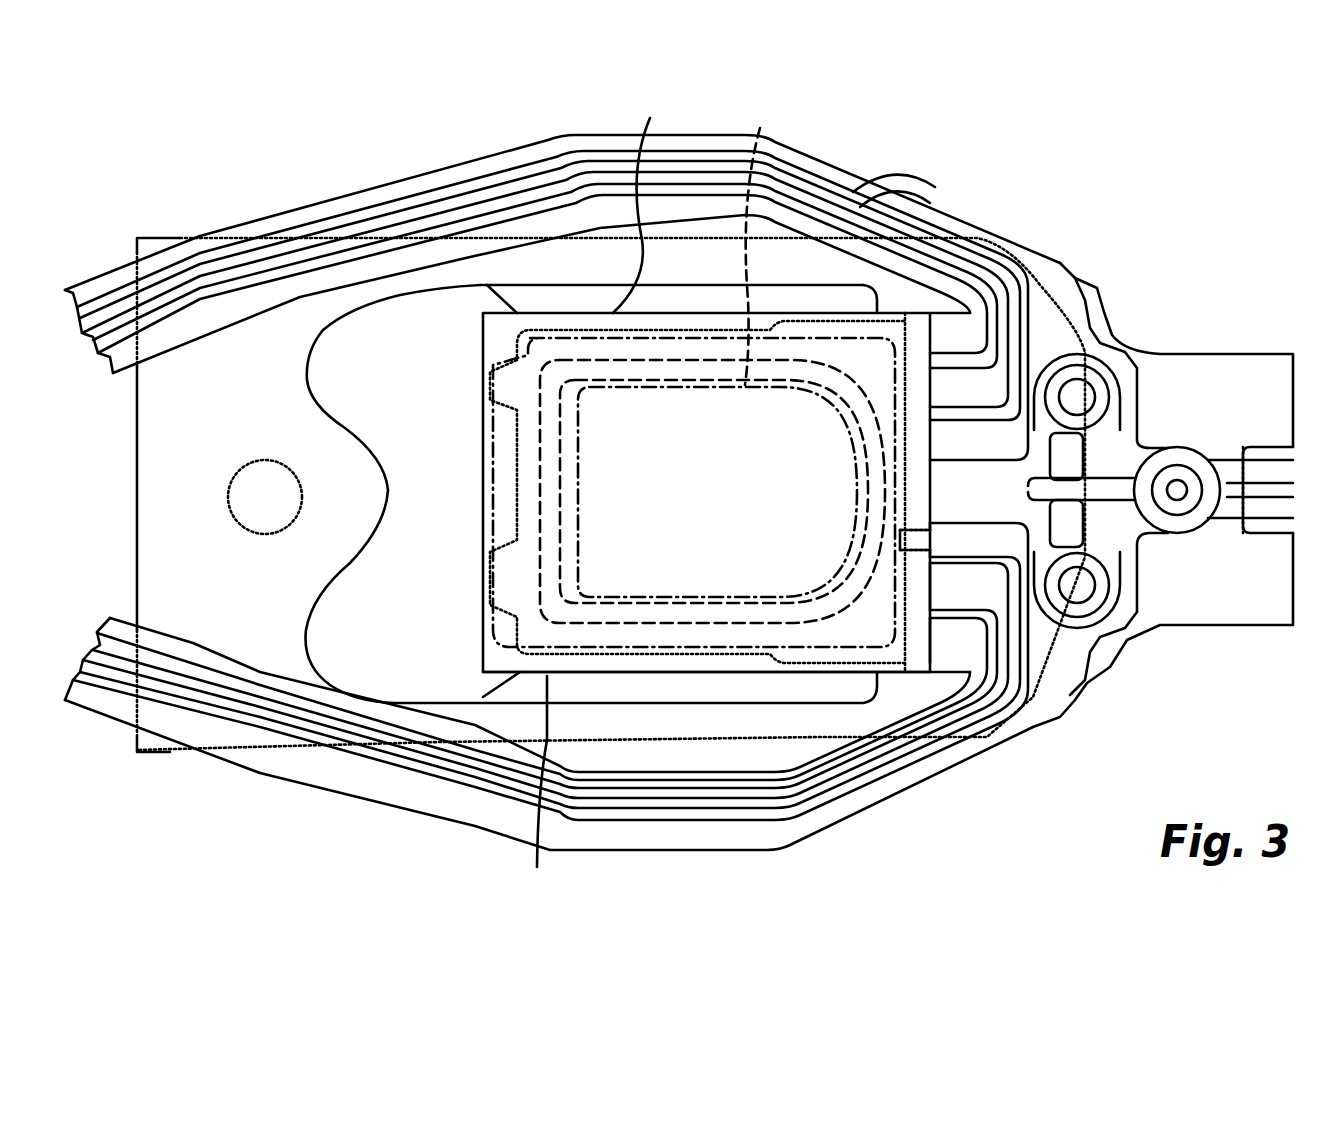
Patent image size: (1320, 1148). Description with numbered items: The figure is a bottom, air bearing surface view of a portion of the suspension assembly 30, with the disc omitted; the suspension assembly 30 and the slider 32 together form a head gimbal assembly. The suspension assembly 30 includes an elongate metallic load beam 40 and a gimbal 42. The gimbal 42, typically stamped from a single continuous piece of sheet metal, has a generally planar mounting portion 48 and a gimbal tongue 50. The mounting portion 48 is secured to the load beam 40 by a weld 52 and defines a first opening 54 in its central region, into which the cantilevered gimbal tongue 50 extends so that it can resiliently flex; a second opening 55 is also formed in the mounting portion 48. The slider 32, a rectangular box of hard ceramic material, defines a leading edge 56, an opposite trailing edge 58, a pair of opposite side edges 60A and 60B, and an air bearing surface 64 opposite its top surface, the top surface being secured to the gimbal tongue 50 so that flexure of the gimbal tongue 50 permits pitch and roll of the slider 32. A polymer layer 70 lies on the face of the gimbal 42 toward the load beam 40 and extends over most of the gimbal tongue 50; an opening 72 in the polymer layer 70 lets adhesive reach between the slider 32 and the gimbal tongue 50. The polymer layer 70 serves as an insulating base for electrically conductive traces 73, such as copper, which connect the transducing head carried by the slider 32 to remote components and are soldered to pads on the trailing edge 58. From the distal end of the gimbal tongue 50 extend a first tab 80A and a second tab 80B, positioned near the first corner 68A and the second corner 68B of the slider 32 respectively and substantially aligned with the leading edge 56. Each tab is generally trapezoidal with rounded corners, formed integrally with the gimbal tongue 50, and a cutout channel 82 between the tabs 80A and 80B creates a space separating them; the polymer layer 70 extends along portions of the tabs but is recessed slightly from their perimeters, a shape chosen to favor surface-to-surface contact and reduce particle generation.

The suspension assembly 30 is at (1147, 293).
The slider 32 is at (577, 672).
The load beam 40 is at (318, 357).
The gimbal 42 is at (214, 410).
The mounting portion 48 is at (170, 485).
The gimbal tongue 50 is at (816, 656).
The weld 52 is at (233, 520).
The first opening 54 is at (303, 650).
The second opening 55 is at (913, 670).
The leading edge 56 is at (483, 643).
The trailing edge 58 is at (980, 680).
The first side edge 60A is at (648, 125).
The second side edge 60B is at (547, 672).
The air bearing surface 64 is at (636, 673).
The first corner 68A is at (488, 318).
The second corner 68B is at (483, 680).
The polymer layer 70 is at (403, 187).
The opening 72 is at (705, 598).
The electrically conductive traces 73 is at (928, 181).
The first tab 80A is at (500, 395).
The second tab 80B is at (500, 578).
The cutout channel 82 is at (520, 482).